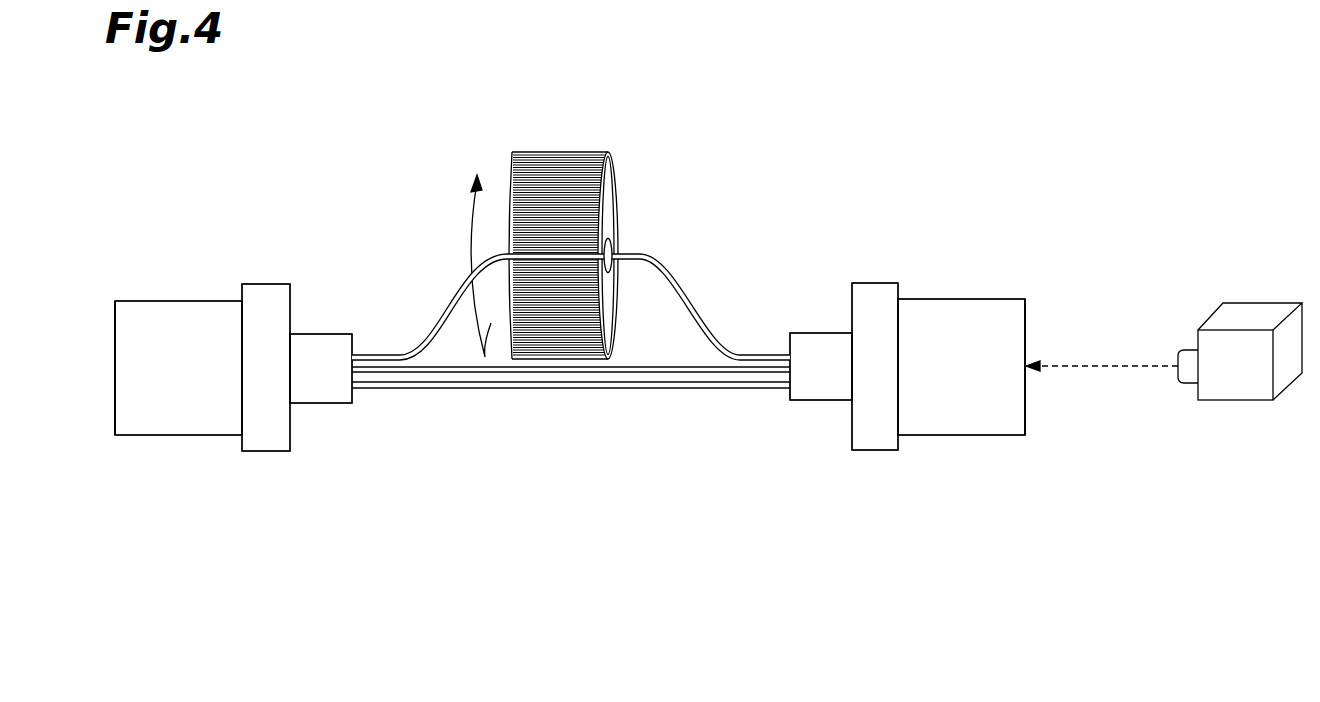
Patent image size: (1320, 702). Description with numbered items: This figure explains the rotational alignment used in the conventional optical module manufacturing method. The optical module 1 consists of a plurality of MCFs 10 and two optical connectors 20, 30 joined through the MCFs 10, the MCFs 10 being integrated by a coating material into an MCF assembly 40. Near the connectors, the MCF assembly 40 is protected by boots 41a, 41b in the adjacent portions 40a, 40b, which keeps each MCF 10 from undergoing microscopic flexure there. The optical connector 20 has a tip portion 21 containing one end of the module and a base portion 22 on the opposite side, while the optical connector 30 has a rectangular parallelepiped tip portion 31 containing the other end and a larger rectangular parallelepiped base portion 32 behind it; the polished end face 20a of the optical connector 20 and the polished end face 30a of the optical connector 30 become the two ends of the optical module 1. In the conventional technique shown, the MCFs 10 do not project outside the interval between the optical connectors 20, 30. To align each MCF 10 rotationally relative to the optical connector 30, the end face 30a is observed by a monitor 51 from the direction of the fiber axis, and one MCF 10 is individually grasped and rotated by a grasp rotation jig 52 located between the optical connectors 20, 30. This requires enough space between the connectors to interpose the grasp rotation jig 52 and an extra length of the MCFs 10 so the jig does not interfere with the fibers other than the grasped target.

The optical module 1 is at (325, 200).
The MCF 10 is at (680, 278).
The optical connector 20 is at (290, 505).
The end face of the optical connector 20a is at (115, 318).
The tip portion 21 is at (178, 436).
The base portion 22 is at (273, 452).
The optical connector 30 is at (985, 505).
The end face of the optical connector 30a is at (1026, 318).
The tip portion 31 is at (970, 436).
The base portion 32 is at (878, 451).
The MCF assembly 40 is at (612, 400).
The adjacent portion 40a is at (321, 368).
The adjacent portion 40b is at (821, 366).
The boot 41a is at (327, 334).
The boot 41b is at (809, 333).
The monitor 51 is at (1245, 303).
The grasp rotation jig 52 is at (560, 152).